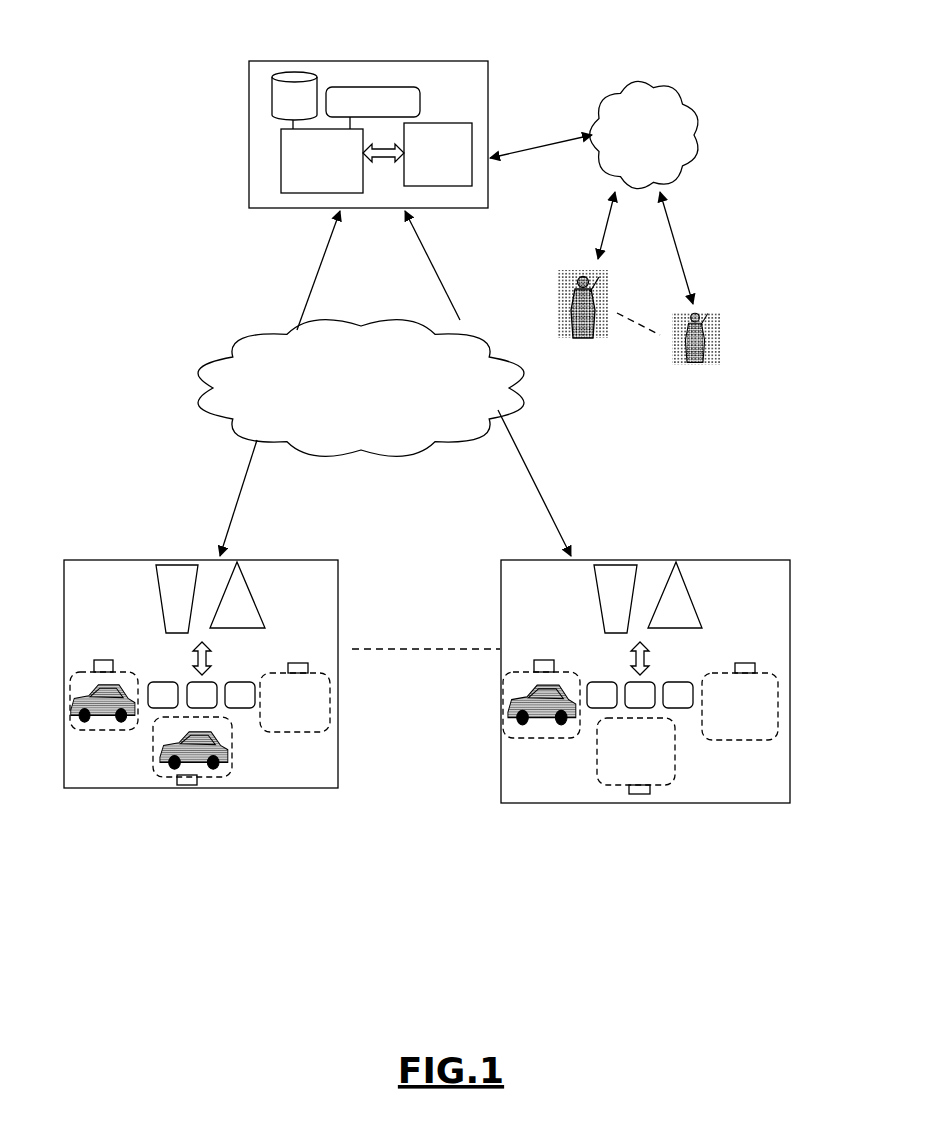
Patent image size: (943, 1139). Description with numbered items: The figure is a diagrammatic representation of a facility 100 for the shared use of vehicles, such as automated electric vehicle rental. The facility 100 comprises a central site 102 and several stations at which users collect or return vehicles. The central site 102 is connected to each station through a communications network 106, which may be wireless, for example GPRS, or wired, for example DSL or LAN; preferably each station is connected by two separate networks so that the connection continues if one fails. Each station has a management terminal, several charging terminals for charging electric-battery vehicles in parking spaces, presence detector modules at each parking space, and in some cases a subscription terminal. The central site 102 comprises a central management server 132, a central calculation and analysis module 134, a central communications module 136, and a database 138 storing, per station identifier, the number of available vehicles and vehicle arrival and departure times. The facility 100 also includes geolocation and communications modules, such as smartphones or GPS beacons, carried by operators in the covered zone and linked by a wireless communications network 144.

The facility 100 is at (438, 900).
The central site 102 is at (249, 198).
The communications network 106 is at (237, 340).
The central management server 132 is at (281, 160).
The calculation and analysis module 134 is at (389, 87).
The communications module 136 is at (455, 123).
The database 138 is at (293, 72).
The wireless communications network 144 is at (610, 97).